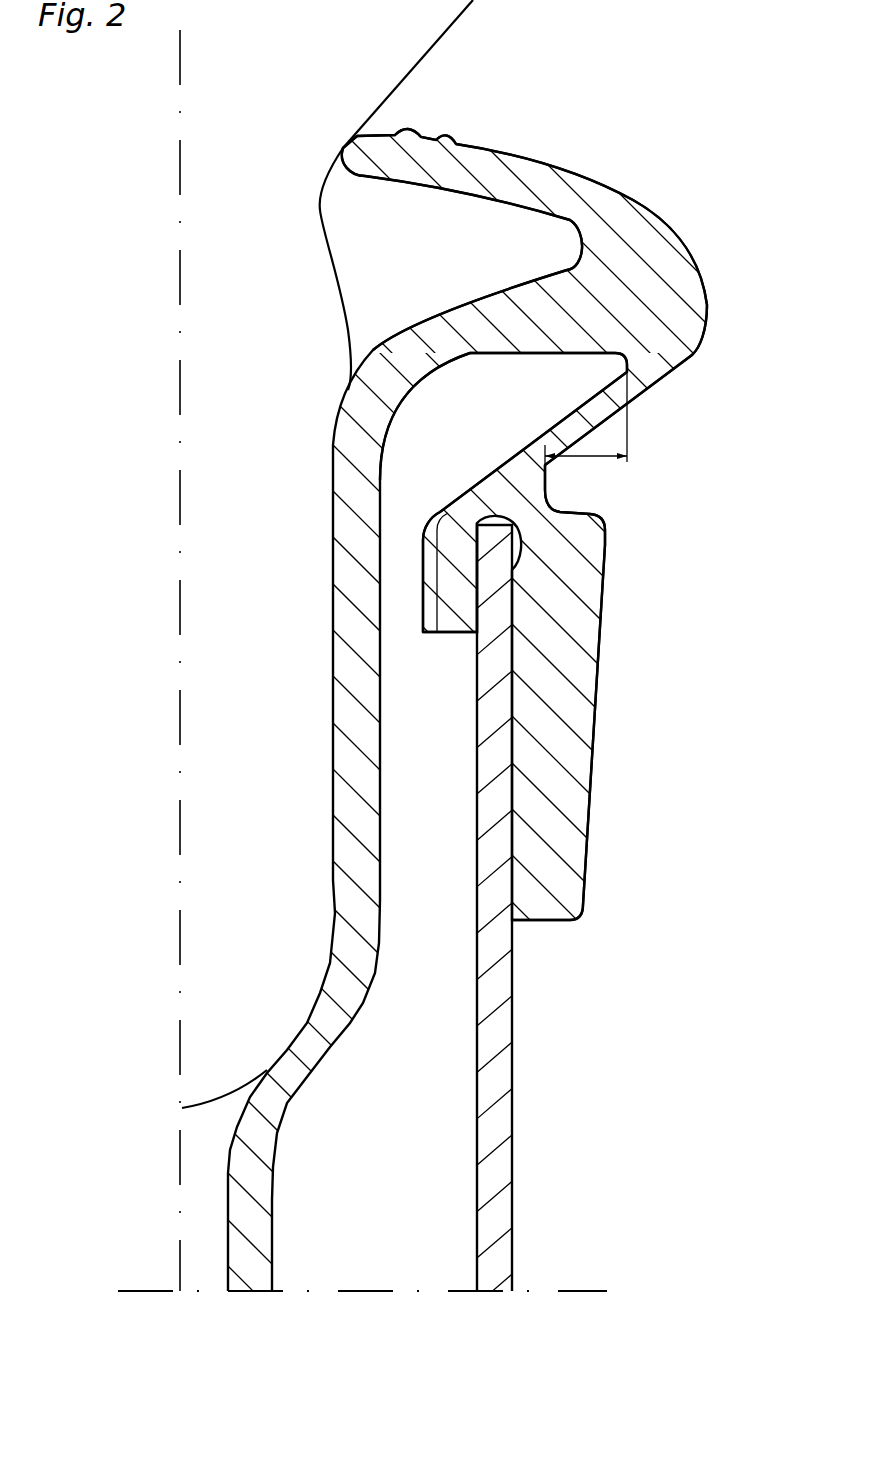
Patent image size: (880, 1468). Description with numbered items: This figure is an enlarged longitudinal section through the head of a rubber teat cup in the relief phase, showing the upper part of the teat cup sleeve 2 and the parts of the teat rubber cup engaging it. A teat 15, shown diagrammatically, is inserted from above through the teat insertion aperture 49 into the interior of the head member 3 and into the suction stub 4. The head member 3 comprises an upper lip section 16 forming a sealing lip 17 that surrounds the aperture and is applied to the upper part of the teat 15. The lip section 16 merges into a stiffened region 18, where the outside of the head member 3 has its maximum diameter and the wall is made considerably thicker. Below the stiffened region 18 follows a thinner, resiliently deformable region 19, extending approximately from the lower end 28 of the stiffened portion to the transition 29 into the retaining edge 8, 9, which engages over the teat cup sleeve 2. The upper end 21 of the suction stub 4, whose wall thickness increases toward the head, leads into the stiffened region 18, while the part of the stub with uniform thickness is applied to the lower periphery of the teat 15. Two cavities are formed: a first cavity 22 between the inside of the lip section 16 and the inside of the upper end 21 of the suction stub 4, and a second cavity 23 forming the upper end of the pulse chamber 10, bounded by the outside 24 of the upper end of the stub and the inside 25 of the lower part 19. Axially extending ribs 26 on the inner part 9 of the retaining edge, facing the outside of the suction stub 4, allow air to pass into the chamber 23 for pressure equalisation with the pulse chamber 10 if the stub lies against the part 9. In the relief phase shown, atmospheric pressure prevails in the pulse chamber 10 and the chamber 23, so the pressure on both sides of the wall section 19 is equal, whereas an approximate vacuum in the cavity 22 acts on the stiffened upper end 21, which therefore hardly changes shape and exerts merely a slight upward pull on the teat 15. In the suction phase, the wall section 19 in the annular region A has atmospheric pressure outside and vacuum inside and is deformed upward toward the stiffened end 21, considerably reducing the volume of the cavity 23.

The shaft 2 is at (497, 1125).
The head member 3 is at (567, 154).
The suction stub 4 is at (363, 802).
The retaining edge 8 is at (585, 632).
The inner part of the retaining edge 9 is at (457, 618).
The pulse chamber 10 is at (419, 1004).
The teat 15 is at (273, 680).
The upper lip section 16 is at (499, 177).
The sealing lip 17 is at (343, 158).
The stiffened region 18 is at (630, 233).
The lower section of the head member 19 is at (652, 389).
The upper end of the suction stub 21 is at (540, 300).
The first cavity 22 is at (360, 228).
The second cavity 23 is at (471, 424).
The outside of the upper end of the suction stub 24 is at (477, 357).
The inside of the lower part of the head member 25 is at (567, 414).
The ribs 26 is at (443, 515).
The lower end of the stiffened portion 28 is at (633, 350).
The transition to the retaining edge 29 is at (502, 483).
The teat insertion aperture 49 is at (342, 143).
The annular region A is at (586, 419).